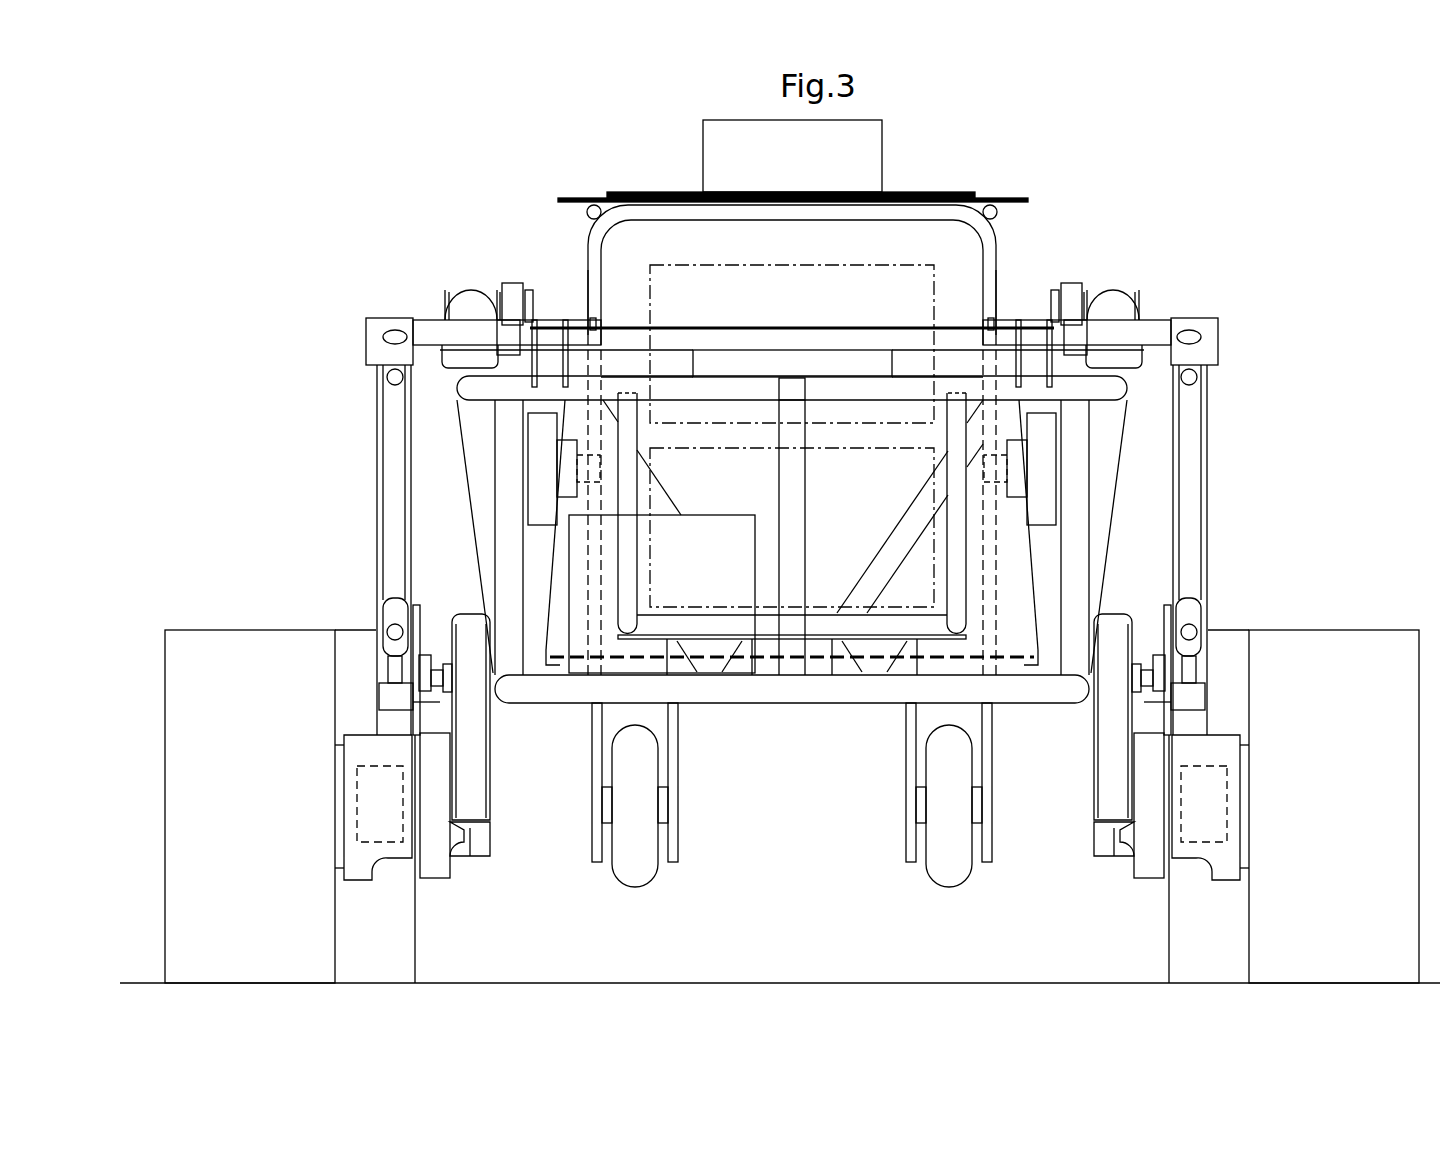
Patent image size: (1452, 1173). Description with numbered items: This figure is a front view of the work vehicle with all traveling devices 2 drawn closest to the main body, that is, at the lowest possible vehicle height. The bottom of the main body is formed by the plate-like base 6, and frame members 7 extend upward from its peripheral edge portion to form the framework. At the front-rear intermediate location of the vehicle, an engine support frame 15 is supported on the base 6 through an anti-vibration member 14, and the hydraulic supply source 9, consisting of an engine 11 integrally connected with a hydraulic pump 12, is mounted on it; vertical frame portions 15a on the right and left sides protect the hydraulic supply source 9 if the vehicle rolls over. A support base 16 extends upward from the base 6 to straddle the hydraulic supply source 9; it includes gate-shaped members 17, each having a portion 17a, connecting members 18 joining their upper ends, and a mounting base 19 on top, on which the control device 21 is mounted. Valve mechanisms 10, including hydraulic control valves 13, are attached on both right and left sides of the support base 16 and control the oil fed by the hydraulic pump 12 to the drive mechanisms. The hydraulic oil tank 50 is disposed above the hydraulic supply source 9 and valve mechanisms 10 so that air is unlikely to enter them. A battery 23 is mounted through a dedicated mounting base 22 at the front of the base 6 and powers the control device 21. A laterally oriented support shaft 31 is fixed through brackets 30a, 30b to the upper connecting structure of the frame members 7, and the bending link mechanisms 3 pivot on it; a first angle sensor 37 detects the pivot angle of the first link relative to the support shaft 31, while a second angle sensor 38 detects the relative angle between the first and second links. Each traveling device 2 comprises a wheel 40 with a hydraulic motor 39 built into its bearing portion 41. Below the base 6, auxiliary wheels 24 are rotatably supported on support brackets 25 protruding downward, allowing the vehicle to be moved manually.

The traveling device 2 is at (298, 555).
The bending link mechanism 3 is at (359, 384).
The base 6 is at (826, 704).
The frame member 7 is at (667, 510).
The hydraulic supply source 9 is at (792, 587).
The valve mechanism 10 is at (789, 463).
The engine 11 is at (792, 526).
The hydraulic pump 12 is at (705, 620).
The hydraulic control valve 13 is at (792, 468).
The anti-vibration member 14 is at (667, 668).
The engine support frame 15 is at (792, 587).
The vertical frame portion 15a is at (628, 580).
The support base 16 is at (795, 422).
The gate-shaped member 17 is at (792, 505).
The portion of the gate-shaped member 17a is at (588, 245).
The connecting member 18 is at (587, 211).
The mounting base 19 is at (1001, 198).
The control device 21 is at (880, 130).
The mounting base 22 is at (887, 656).
The battery 23 is at (743, 512).
The auxiliary wheel 24 is at (640, 886).
The support bracket 25 is at (678, 836).
The bracket 30a is at (1052, 337).
The bracket 30b is at (592, 326).
The support shaft 31 is at (872, 332).
The first angle sensor 37 is at (496, 269).
The second angle sensor 38 is at (427, 640).
The hydraulic motor 39 is at (357, 791).
The wheel 40 is at (204, 632).
The bearing portion 41 is at (358, 737).
The hydraulic oil tank 50 is at (678, 265).